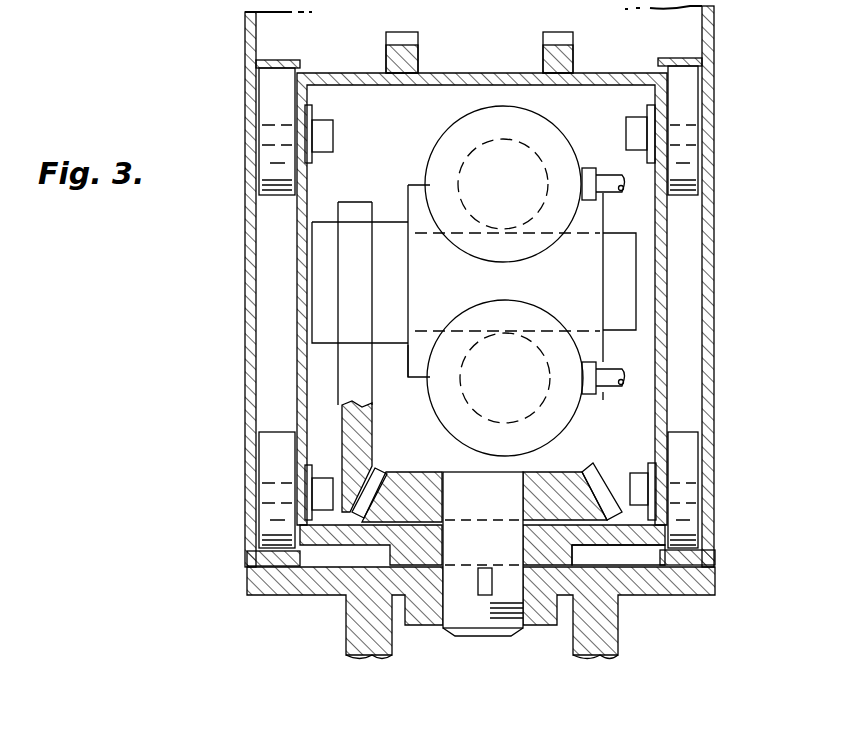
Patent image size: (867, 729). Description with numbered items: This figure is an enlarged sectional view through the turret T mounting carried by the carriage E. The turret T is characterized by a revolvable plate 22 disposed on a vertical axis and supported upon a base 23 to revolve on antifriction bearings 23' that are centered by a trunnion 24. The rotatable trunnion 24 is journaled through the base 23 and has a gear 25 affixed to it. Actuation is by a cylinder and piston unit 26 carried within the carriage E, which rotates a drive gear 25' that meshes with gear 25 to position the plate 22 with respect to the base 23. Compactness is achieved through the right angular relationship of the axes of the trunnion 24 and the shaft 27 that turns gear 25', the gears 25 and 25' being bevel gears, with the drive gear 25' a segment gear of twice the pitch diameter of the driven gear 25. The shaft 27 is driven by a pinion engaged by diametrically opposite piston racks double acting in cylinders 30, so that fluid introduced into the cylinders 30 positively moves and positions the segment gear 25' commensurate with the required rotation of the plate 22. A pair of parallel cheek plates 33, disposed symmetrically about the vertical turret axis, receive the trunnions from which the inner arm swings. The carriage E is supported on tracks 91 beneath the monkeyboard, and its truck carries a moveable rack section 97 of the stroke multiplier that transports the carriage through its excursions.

The revolvable plate 22 is at (255, 592).
The base 23 is at (363, 578).
The antifriction bearings 23' is at (594, 550).
The trunnion 24 is at (520, 546).
The gear 25 is at (572, 479).
The drive gear 25' is at (392, 461).
The cylinder and piston unit 26 is at (468, 122).
The shaft 27 is at (418, 342).
The cylinders 30 is at (545, 122).
The cheek plates 33 is at (342, 640).
The tracks 91 is at (270, 78).
The moveable rack section 97 is at (420, 52).
The carriage E is at (288, 404).
The roller frame F' is at (535, 295).
The turret T is at (715, 596).